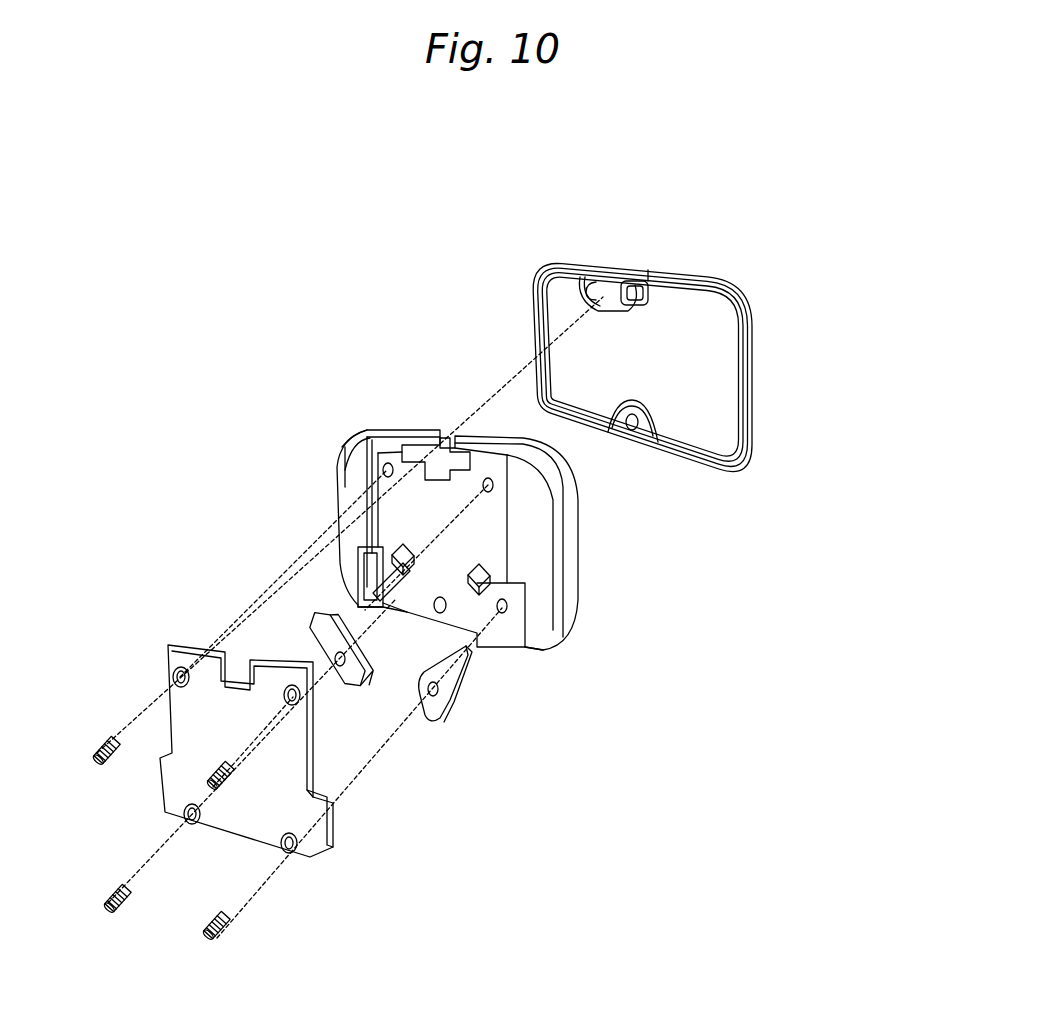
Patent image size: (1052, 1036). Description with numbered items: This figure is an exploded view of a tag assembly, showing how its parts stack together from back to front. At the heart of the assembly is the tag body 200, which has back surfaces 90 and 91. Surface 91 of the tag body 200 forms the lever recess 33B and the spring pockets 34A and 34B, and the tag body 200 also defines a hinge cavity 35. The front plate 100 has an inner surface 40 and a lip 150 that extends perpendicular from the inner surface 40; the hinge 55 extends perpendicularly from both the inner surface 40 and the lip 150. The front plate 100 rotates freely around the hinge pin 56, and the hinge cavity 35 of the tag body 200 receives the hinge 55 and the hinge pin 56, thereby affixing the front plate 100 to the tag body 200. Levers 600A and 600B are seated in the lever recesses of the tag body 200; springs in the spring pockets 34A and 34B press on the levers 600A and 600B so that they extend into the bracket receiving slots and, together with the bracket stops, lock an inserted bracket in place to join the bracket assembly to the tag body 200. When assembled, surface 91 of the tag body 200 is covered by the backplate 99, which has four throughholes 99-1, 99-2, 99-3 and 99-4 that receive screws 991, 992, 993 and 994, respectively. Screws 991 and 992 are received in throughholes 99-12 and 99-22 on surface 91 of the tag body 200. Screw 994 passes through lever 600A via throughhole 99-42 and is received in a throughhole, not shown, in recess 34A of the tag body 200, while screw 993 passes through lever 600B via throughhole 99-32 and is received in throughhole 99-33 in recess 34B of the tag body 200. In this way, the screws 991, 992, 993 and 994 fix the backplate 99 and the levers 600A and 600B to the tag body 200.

The front plate 100 is at (740, 284).
The lip 150 is at (757, 343).
The inner surface 40 is at (717, 403).
The hinge 55 is at (603, 275).
The hinge pin 56 is at (633, 282).
The tag body 200 is at (507, 445).
The surface 91 is at (388, 447).
The hinge cavity 35 is at (417, 427).
The throughhole 99-12 is at (368, 458).
The throughhole 99-22 is at (493, 483).
The spring pocket 34A is at (388, 547).
The spring pocket 34B is at (477, 580).
The lever recess 33B is at (502, 582).
The back surface 90 is at (532, 633).
The throughhole 99-33 is at (522, 642).
The throughhole 99-32 is at (437, 696).
The throughhole 99-42 is at (336, 658).
The backplate 99 is at (333, 817).
The throughhole 99-1 is at (172, 683).
The throughhole 99-2 is at (300, 705).
The throughhole 99-3 is at (294, 848).
The throughhole 99-4 is at (182, 820).
The screw 991 is at (97, 753).
The screw 992 is at (213, 787).
The screw 993 is at (222, 936).
The screw 994 is at (107, 903).
The lever 600A is at (357, 663).
The lever 600B is at (450, 695).